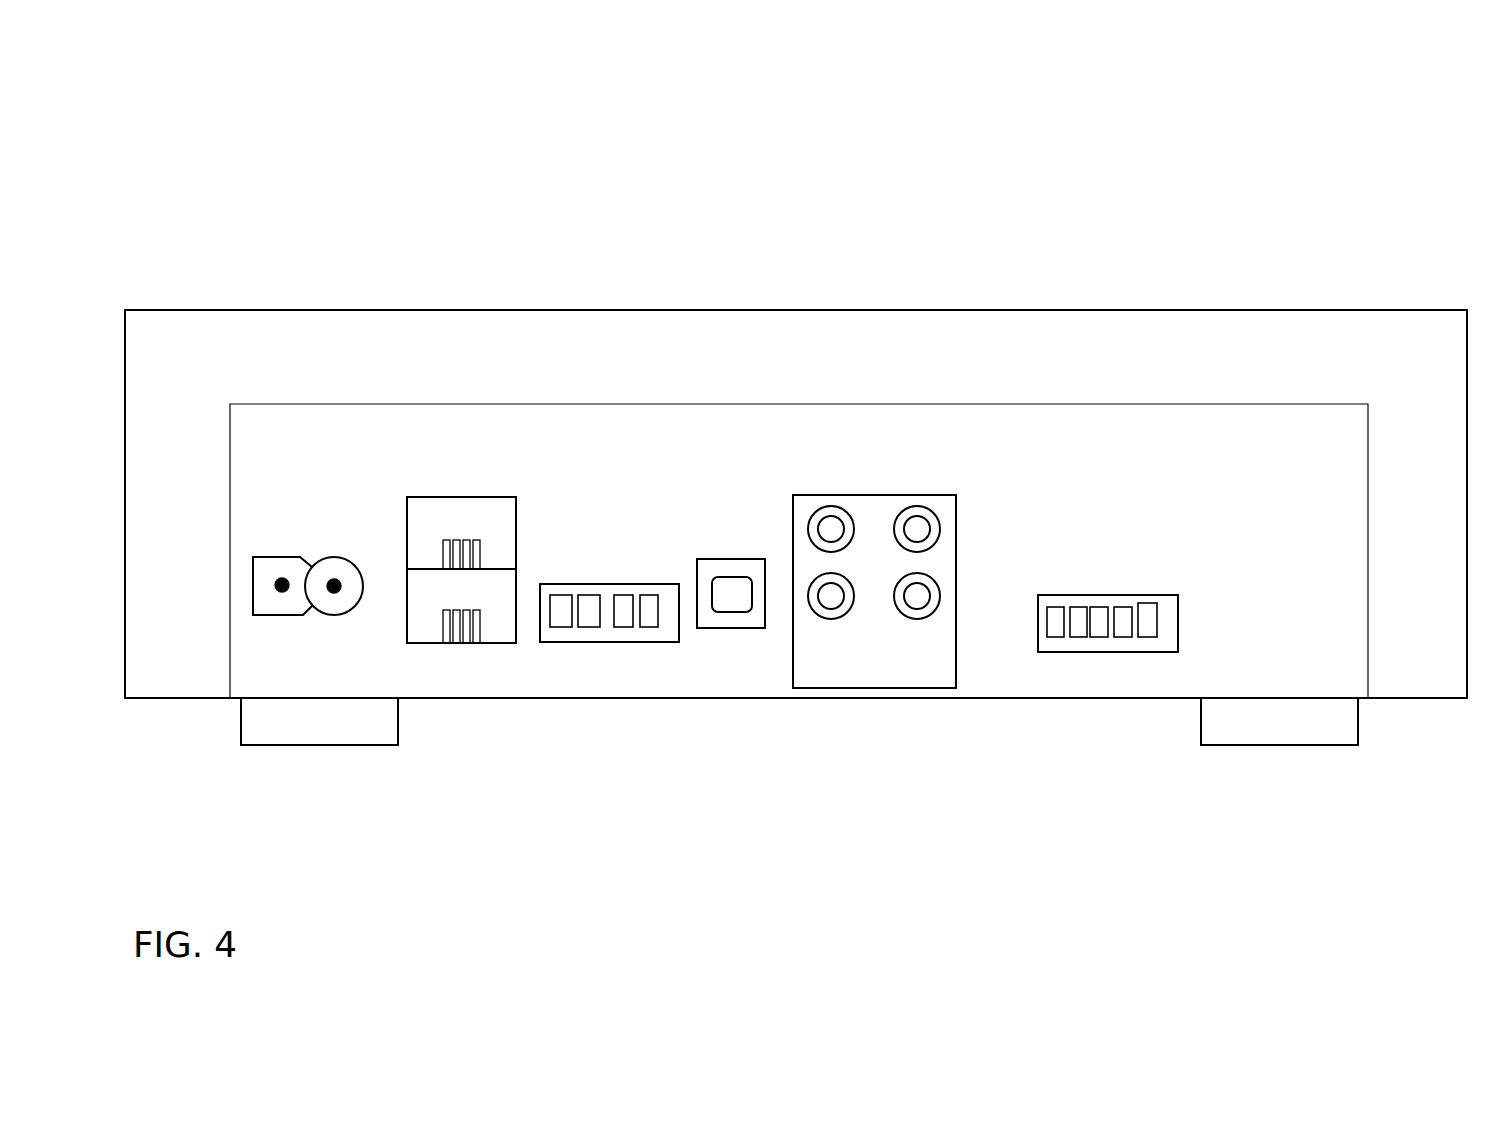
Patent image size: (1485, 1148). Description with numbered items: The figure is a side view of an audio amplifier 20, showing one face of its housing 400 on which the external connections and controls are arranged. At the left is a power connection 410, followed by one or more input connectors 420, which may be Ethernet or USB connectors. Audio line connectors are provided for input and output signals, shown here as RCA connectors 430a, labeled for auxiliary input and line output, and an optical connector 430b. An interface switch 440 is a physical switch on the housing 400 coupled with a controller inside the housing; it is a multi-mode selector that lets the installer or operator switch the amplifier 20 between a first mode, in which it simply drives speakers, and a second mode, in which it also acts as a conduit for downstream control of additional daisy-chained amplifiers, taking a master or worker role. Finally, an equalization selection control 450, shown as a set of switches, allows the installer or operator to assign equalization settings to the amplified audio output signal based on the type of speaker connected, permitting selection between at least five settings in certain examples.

The amplifier 20 is at (157, 104).
The housing 400 is at (624, 251).
The power connection 410 is at (312, 527).
The input connectors 420 is at (538, 485).
The RCA connectors 430a is at (972, 498).
The optical connectors 430b is at (726, 644).
The interface switch 440 is at (632, 535).
The equalization selection control 450 is at (1147, 537).